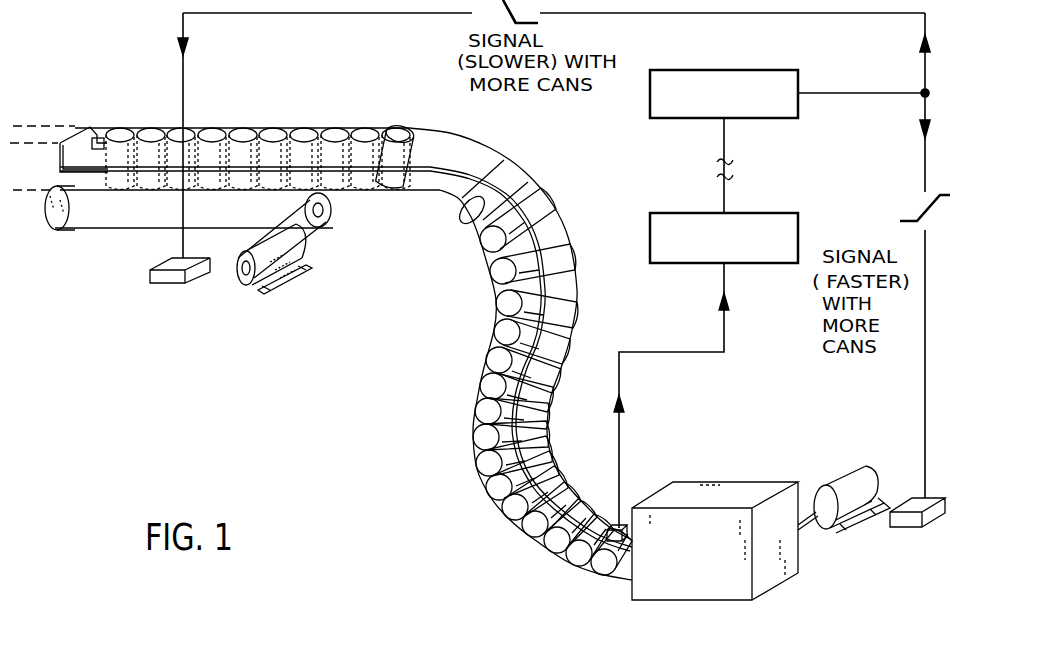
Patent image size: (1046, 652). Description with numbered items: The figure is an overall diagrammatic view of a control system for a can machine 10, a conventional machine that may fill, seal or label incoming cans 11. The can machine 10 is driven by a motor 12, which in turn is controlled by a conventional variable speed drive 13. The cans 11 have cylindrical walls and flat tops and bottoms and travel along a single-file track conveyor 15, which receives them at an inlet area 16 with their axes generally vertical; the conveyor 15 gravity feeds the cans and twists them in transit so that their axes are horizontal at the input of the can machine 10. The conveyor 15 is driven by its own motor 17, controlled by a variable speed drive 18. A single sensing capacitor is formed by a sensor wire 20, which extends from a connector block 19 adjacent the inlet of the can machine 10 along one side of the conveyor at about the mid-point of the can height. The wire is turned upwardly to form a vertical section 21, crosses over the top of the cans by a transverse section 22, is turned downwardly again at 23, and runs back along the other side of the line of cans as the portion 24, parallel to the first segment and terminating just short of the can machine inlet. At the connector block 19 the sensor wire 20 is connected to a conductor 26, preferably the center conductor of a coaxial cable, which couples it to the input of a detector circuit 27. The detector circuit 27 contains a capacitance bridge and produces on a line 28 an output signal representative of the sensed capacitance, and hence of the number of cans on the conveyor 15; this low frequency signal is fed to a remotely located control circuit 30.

The can machine 10 is at (700, 555).
The cans 11 is at (548, 552).
The motor 12 is at (842, 477).
The variable speed drive 13 is at (912, 528).
The single-file track conveyor 15 is at (321, 311).
The inlet area 16 is at (101, 90).
The motor 17 is at (307, 248).
The variable speed drive 18 is at (163, 288).
The connector block 19 is at (613, 545).
The sensor wire 20 is at (497, 453).
The vertical section 21 is at (60, 165).
The transverse section 22 is at (80, 128).
The downward turn 23 is at (98, 232).
The portion of sensing wire 24 is at (100, 232).
The conductor 26 is at (683, 353).
The detector circuit 27 is at (688, 265).
The line 28 is at (723, 192).
The control circuit 30 is at (770, 68).